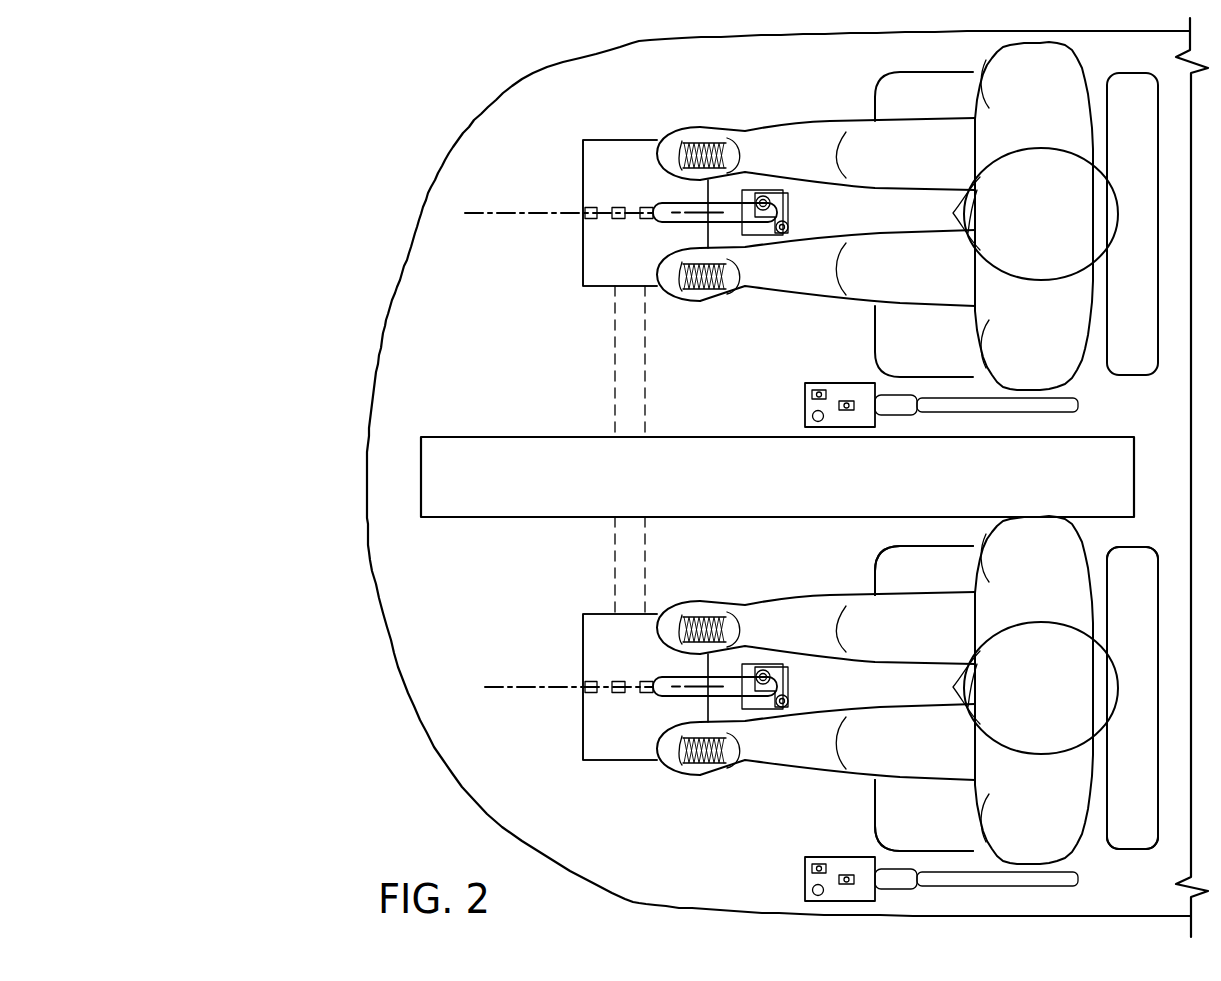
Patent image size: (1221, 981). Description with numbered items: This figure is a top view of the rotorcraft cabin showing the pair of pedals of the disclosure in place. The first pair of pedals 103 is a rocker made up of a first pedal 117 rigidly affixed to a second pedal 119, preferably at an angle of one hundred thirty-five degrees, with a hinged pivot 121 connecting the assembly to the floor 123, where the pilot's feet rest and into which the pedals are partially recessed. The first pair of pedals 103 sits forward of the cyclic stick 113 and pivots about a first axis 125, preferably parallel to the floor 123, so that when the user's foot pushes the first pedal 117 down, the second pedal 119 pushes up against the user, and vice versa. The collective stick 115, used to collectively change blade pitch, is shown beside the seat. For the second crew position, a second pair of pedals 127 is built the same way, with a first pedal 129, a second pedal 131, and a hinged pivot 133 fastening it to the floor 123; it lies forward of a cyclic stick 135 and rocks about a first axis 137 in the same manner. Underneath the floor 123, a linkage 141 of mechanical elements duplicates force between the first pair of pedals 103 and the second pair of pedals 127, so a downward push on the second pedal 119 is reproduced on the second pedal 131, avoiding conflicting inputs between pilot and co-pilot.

The first pair of pedals 103 is at (583, 640).
The cyclic stick 113 is at (688, 676).
The collective stick 115 is at (838, 857).
The first pedal 117 is at (583, 722).
The second pedal 119 is at (587, 614).
The hinged pivot 121 is at (611, 679).
The floor 123 is at (465, 645).
The first axis 125 is at (490, 688).
The second pair of pedals 127 is at (583, 160).
The first pedal 129 is at (583, 265).
The second pedal 131 is at (627, 140).
The hinged pivot 133 is at (613, 220).
The cyclic stick 135 is at (790, 206).
The first axis 137 is at (482, 215).
The linkage 141 is at (615, 358).